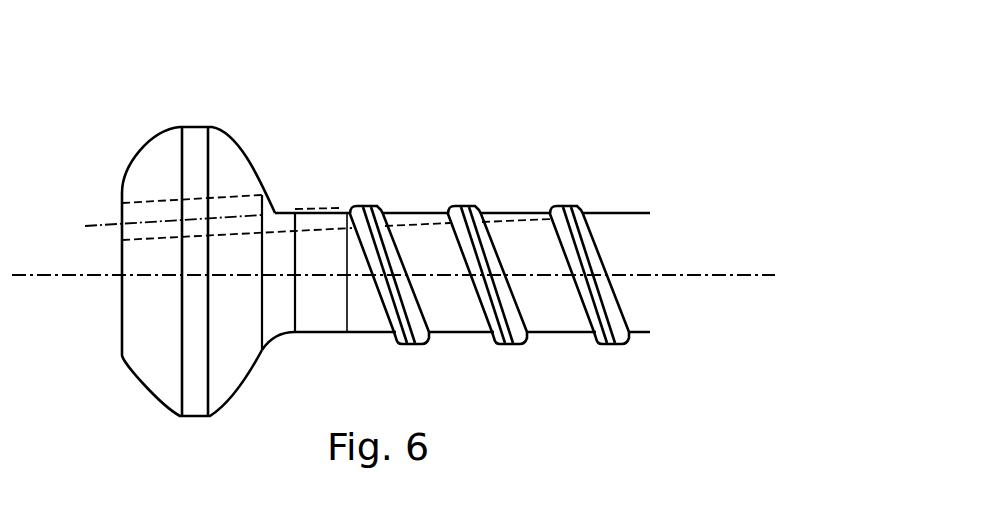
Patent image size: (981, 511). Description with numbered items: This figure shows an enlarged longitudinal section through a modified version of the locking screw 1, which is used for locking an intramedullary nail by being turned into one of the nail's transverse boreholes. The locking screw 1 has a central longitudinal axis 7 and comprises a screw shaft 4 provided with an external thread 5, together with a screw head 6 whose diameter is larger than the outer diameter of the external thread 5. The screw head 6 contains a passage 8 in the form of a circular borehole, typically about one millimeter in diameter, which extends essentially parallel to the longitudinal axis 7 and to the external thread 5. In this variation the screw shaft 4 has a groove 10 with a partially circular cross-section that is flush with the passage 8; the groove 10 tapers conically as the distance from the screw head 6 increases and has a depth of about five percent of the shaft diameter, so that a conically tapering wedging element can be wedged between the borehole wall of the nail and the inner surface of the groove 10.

The locking screw 1 is at (527, 238).
The screw shaft 4 is at (432, 258).
The external thread 5 is at (590, 247).
The screw head 6 is at (199, 163).
The central longitudinal axis 7 is at (80, 277).
The passage 8 is at (147, 212).
The groove 10 is at (275, 225).